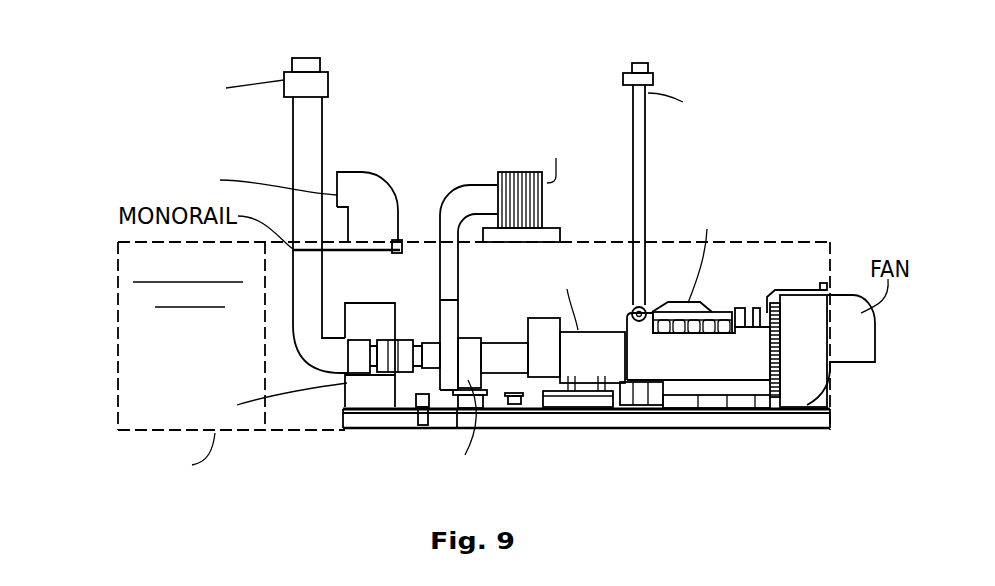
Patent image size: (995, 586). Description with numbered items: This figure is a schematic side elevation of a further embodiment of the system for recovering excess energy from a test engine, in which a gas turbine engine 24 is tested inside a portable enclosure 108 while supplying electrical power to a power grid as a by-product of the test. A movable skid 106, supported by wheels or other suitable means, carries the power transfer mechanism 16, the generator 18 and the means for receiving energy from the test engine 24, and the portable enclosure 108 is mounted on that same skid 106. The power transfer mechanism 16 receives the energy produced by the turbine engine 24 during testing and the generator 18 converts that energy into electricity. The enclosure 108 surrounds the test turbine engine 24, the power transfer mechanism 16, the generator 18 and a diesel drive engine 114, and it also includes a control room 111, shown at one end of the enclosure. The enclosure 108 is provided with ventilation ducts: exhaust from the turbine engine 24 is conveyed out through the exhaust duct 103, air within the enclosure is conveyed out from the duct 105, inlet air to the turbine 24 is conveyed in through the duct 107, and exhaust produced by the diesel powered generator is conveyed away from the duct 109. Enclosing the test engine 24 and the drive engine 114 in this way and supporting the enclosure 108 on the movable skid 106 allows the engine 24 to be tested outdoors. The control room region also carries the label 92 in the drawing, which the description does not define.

The power transfer mechanism 16 is at (472, 360).
The generator 18 is at (591, 372).
The gas turbine engine 24 is at (413, 110).
The control room 92 is at (208, 351).
The exhaust duct 103 is at (283, 63).
The duct 105 is at (364, 181).
The movable skid 106 is at (697, 418).
The duct 107 is at (458, 206).
The portable enclosure 108 is at (281, 430).
The duct 109 is at (627, 103).
The control room 111 is at (117, 403).
The drive engine 114 is at (757, 380).